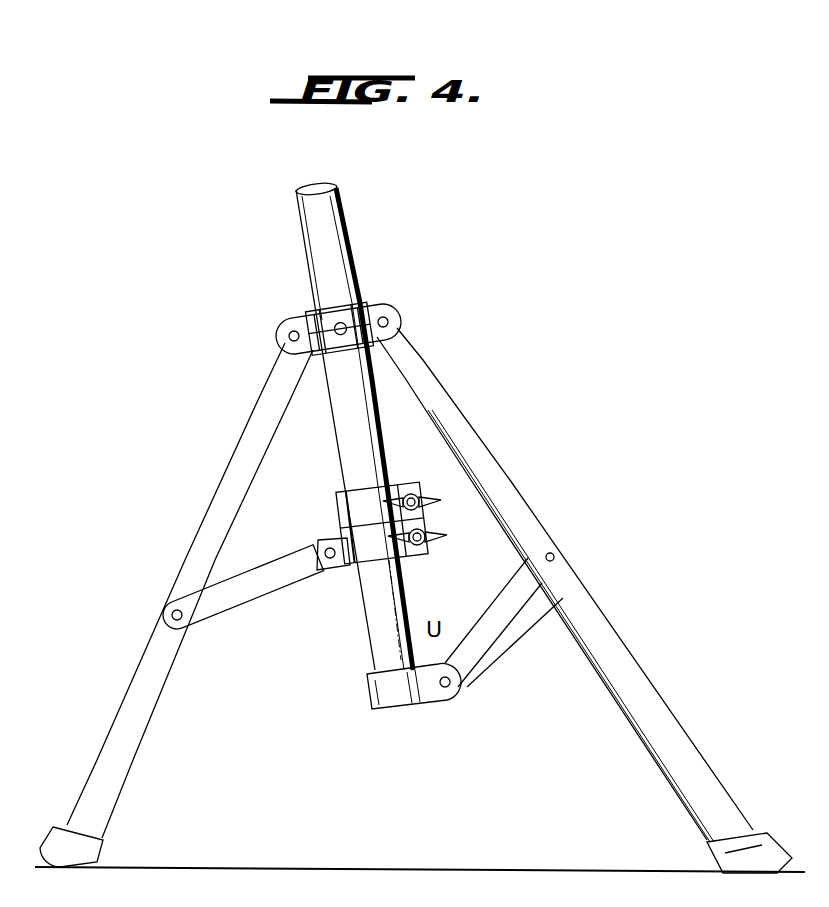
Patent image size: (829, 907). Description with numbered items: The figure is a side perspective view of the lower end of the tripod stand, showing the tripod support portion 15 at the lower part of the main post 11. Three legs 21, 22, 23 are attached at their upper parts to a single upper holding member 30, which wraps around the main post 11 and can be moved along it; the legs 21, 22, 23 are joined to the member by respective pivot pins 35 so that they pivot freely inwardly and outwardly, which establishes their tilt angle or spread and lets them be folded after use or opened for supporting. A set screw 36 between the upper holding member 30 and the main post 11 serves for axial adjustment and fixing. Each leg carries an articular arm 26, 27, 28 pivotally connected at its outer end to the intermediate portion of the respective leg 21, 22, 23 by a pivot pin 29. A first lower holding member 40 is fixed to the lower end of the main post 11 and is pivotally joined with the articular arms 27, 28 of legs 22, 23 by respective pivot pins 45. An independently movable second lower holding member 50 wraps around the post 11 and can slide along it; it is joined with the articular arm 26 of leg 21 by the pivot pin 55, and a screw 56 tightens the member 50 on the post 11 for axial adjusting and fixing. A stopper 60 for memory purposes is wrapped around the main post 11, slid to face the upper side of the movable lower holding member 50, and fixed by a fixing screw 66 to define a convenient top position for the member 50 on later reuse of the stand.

The main post 11 is at (343, 212).
The tripod support portion 15 is at (361, 276).
The leg 21 is at (215, 540).
The leg 22 is at (608, 640).
The leg 23 is at (647, 747).
The articular arm 26 is at (211, 610).
The articular arm 27 is at (497, 618).
The articular arm 28 is at (545, 605).
The pivot pin 29 is at (170, 618).
The upper holding member 30 is at (300, 318).
The pivot pin 35 is at (385, 298).
The set screw 36 is at (358, 297).
The first lower holding member 40 is at (400, 697).
The pivot pin 45 is at (445, 695).
The second lower holding member 50 is at (372, 550).
The pivot pin 55 is at (312, 580).
The screw 56 is at (426, 553).
The stopper 60 is at (342, 505).
The fixing screw 66 is at (410, 493).